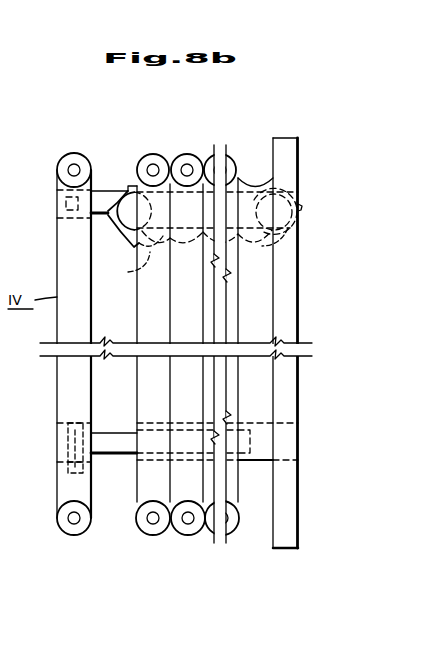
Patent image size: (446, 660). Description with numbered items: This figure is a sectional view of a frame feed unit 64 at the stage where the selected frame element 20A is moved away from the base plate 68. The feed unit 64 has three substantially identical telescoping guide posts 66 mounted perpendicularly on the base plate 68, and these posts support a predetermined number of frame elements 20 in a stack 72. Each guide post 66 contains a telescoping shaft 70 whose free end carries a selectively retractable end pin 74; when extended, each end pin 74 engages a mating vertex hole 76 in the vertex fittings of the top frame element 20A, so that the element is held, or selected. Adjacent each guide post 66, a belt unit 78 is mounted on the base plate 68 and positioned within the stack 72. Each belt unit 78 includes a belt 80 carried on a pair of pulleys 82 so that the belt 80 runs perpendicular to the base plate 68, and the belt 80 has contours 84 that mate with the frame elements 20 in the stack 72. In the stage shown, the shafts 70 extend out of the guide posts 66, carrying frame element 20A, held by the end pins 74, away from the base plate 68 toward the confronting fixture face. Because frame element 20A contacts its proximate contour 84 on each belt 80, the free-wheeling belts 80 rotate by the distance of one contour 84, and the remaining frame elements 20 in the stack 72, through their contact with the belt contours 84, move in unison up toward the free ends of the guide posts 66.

The selected frame element 20A is at (70, 152).
The frame elements 20 is at (185, 153).
The telescoping shaft 70 is at (103, 191).
The pulleys 82 is at (127, 190).
The contours 84 is at (128, 272).
The belt unit 78 is at (292, 237).
The belt 80 is at (254, 249).
The base plate 68 is at (288, 137).
The frame feed unit 64 is at (306, 298).
The telescoping guide post 66 is at (253, 423).
The end pin 74 is at (67, 446).
The vertex hole 76 is at (67, 471).
The stack 72 is at (180, 542).